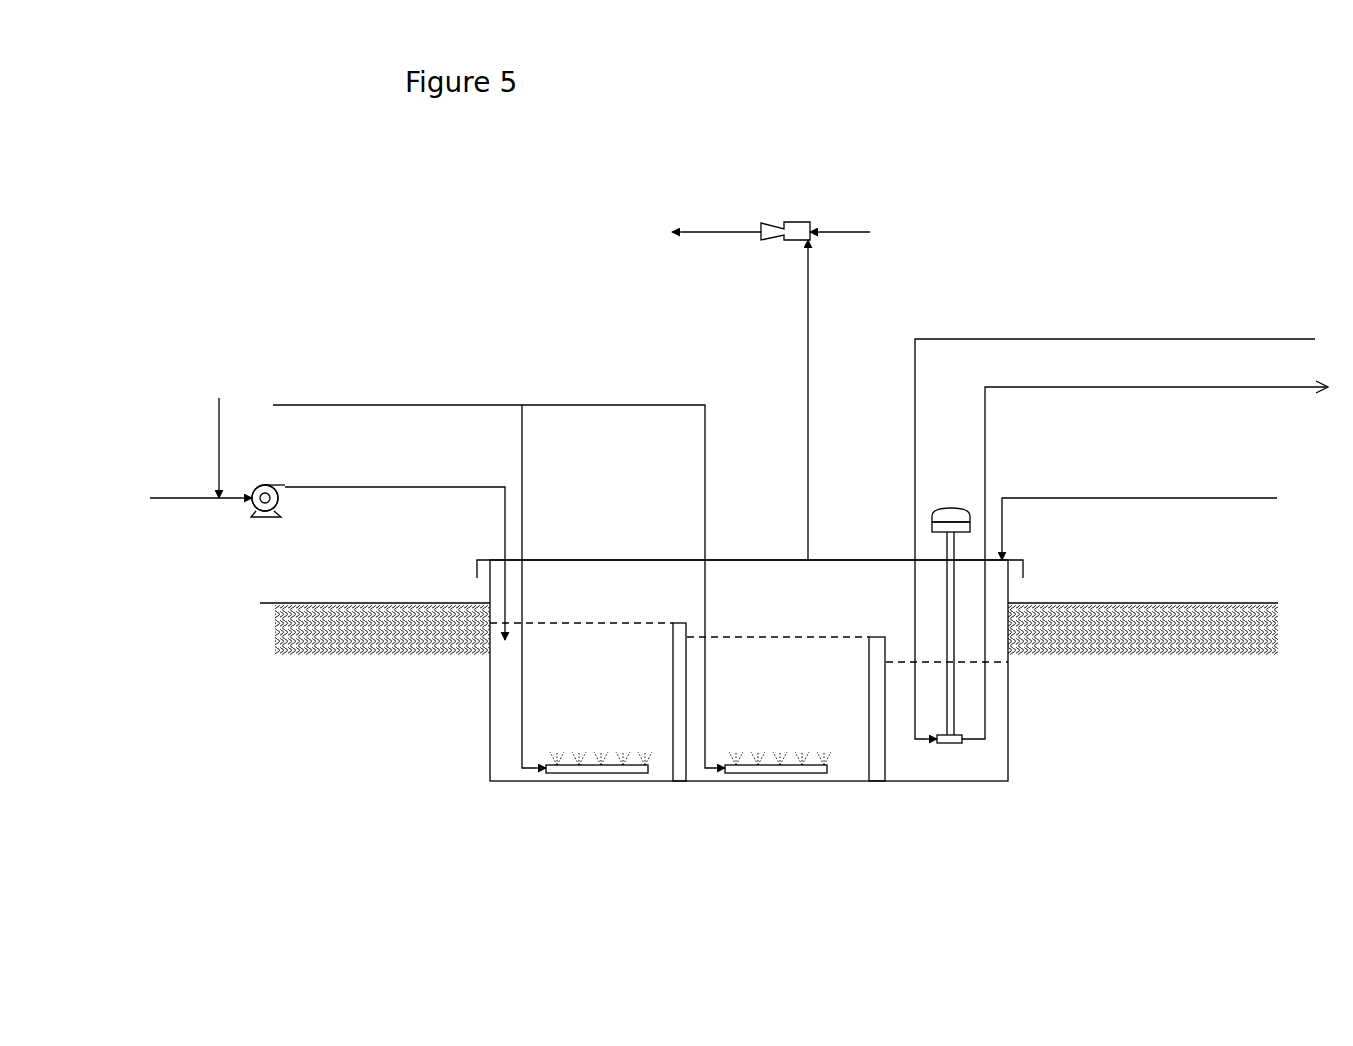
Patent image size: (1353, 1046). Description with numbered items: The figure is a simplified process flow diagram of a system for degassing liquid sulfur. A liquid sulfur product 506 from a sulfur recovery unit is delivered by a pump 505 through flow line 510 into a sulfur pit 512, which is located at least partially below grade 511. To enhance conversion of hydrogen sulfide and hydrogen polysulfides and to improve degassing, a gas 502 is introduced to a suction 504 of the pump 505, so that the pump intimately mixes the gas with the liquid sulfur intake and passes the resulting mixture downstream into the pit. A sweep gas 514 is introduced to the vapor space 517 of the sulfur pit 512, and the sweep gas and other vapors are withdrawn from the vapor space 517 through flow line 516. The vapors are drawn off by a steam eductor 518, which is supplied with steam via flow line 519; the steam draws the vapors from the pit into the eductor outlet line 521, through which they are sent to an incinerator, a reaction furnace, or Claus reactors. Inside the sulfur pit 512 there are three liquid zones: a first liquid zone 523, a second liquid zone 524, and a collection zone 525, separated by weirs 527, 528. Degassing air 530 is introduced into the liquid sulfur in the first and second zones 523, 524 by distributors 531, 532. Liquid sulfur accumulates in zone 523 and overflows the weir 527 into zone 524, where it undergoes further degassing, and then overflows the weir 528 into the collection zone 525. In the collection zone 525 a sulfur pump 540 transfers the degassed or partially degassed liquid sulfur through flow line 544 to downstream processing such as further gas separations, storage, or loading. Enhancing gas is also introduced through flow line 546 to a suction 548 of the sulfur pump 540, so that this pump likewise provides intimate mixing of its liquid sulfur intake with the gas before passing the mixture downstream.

The gas 502 is at (218, 407).
The suction 504 is at (240, 506).
The pump 505 is at (268, 482).
The liquid sulfur product 506 is at (166, 501).
The flow line 510 is at (341, 493).
The grade 511 is at (332, 602).
The sulfur pit 512 is at (490, 754).
The sweep gas 514 is at (1176, 502).
The flow line 516 is at (809, 336).
The vapor space 517 is at (749, 622).
The steam eductor 518 is at (793, 225).
The flow line 519 is at (844, 239).
The eductor outlet line 521 is at (704, 239).
The liquid zone 523 is at (581, 663).
The liquid zone 524 is at (778, 675).
The collection zone 525 is at (947, 718).
The weir 527 is at (677, 784).
The weir 528 is at (878, 784).
The degassing air 530 is at (362, 402).
The distributor 531 is at (600, 774).
The distributor 532 is at (753, 774).
The sulfur pump 540 is at (952, 507).
The flow line 544 is at (1129, 395).
The flow line 546 is at (1244, 343).
The suction 548 is at (934, 745).